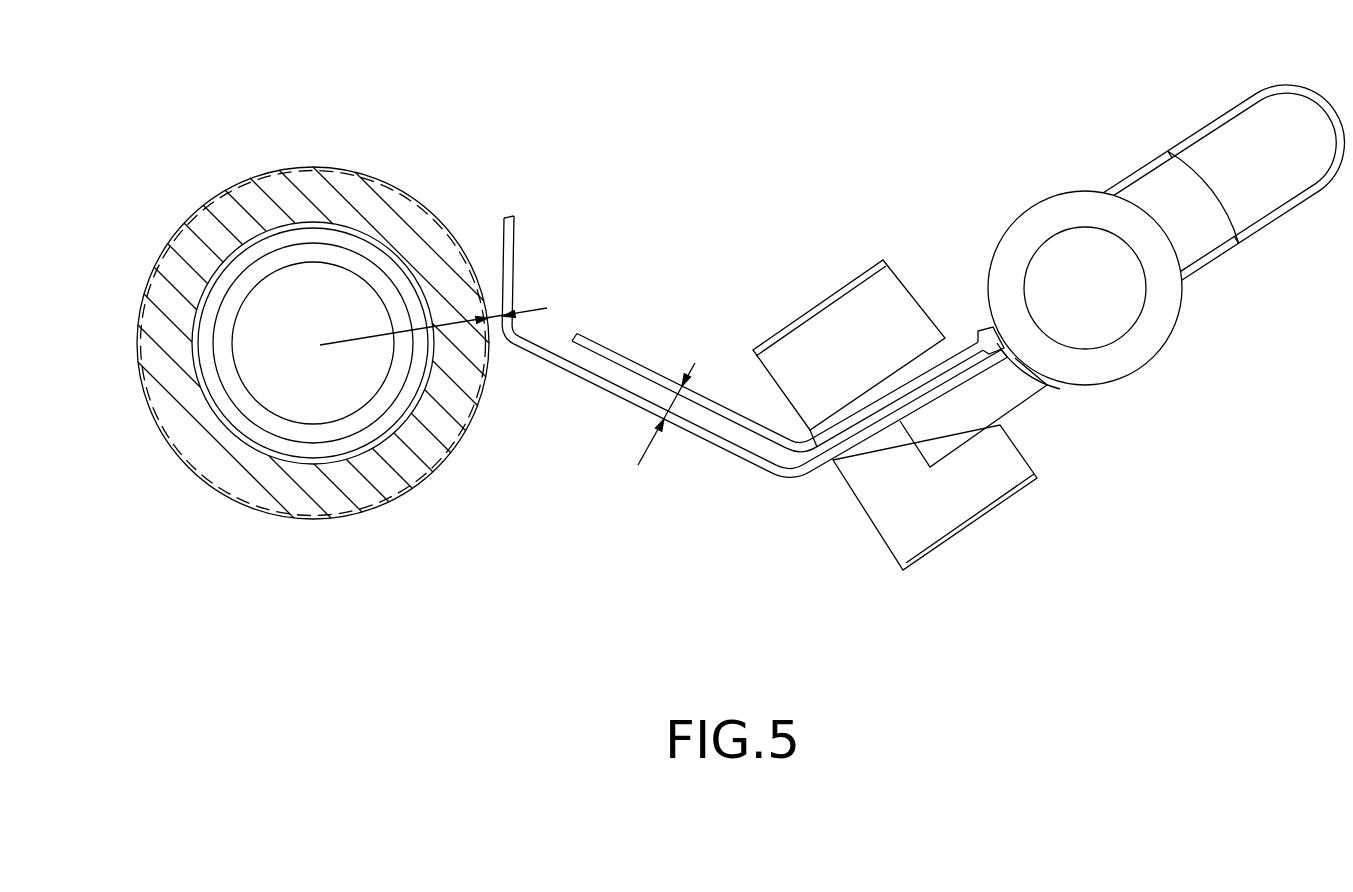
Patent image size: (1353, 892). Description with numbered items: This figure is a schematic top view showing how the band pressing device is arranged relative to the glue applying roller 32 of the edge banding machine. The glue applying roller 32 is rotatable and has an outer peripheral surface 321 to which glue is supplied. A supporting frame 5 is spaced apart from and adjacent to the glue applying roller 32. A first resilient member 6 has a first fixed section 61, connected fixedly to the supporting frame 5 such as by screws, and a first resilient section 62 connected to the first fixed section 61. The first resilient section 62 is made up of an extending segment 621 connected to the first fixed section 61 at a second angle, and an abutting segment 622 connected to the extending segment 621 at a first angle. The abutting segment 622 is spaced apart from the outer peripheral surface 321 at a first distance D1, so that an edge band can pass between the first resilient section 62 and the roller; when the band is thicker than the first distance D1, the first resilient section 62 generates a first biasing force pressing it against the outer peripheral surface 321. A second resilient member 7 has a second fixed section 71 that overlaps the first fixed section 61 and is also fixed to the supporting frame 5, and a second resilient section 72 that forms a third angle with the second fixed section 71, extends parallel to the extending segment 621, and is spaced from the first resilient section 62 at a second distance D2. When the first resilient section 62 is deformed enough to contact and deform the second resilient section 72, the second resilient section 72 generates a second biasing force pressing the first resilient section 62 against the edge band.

The glue applying roller 32 is at (212, 197).
The outer peripheral surface 321 is at (170, 262).
The supporting frame 5 is at (1122, 382).
The first resilient member 6 is at (756, 388).
The first fixed section 61 is at (918, 450).
The first resilient section 62 is at (614, 309).
The extending segment 621 is at (596, 378).
The abutting segment 622 is at (508, 255).
The second resilient member 7 is at (788, 390).
The second fixed section 71 is at (875, 402).
The second resilient section 72 is at (627, 350).
The first distance D1 is at (433, 326).
The second distance D2 is at (650, 414).